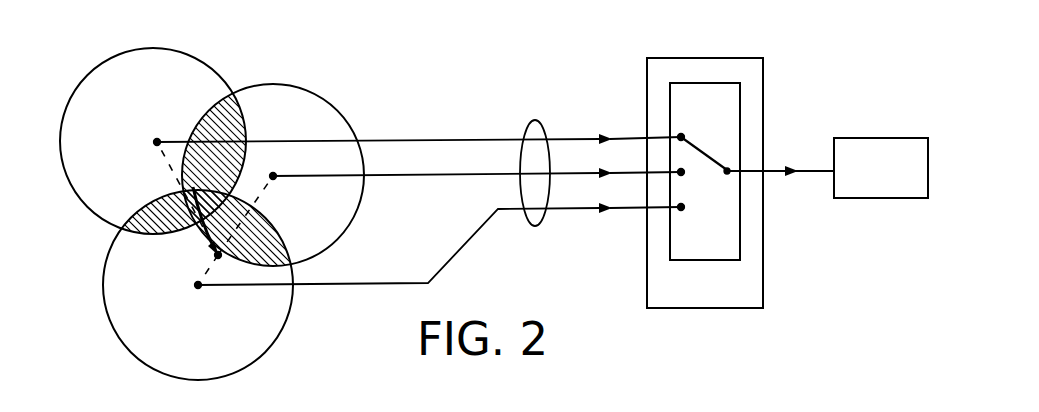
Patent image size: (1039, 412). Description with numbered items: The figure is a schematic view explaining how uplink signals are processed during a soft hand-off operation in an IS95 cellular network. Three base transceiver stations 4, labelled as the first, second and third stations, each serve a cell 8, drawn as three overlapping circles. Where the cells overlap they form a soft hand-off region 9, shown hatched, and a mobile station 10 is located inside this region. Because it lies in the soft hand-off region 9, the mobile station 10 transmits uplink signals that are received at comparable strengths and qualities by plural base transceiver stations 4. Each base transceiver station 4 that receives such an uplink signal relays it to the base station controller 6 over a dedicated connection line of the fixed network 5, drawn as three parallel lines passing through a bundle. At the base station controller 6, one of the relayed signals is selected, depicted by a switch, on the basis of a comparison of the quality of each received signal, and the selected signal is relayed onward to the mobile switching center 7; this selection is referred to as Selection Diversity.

The base transceiver station 4 is at (157, 142).
The fixed network 5 is at (542, 120).
The base station controller 6 is at (720, 57).
The mobile switching center 7 is at (880, 137).
The cell 8 is at (340, 106).
The soft hand-off region 9 is at (247, 118).
The mobile station 10 is at (236, 230).